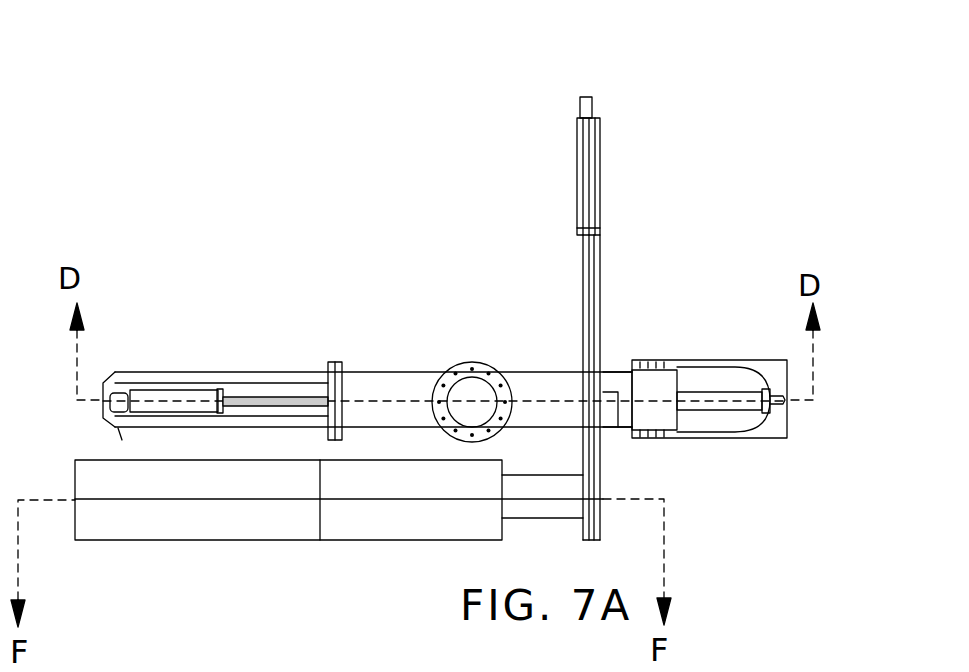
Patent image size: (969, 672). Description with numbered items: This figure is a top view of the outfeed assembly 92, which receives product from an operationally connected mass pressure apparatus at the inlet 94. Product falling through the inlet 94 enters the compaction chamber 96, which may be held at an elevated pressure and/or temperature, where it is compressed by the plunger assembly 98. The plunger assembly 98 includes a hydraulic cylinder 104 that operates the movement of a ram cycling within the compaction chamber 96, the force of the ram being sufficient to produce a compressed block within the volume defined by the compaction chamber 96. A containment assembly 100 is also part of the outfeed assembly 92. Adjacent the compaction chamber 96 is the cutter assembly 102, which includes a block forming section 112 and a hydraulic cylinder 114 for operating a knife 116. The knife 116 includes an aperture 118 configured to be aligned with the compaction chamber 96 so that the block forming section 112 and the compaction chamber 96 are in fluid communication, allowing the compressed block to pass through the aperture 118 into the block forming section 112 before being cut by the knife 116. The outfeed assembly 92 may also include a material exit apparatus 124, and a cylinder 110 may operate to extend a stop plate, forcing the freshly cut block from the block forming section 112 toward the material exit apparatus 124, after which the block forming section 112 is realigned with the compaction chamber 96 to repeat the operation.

The outfeed assembly 92 is at (465, 112).
The inlet 94 is at (468, 390).
The compaction chamber 96 is at (380, 382).
The plunger assembly 98 is at (182, 350).
The containment assembly 100 is at (700, 330).
The cutter assembly 102 is at (655, 232).
The hydraulic cylinder 104 is at (205, 392).
The cylinder 110 is at (740, 405).
The block forming section 112 is at (616, 378).
The hydraulic cylinder 114 is at (577, 170).
The knife 116 is at (606, 350).
The aperture 118 is at (608, 400).
The material exit apparatus 124 is at (396, 576).